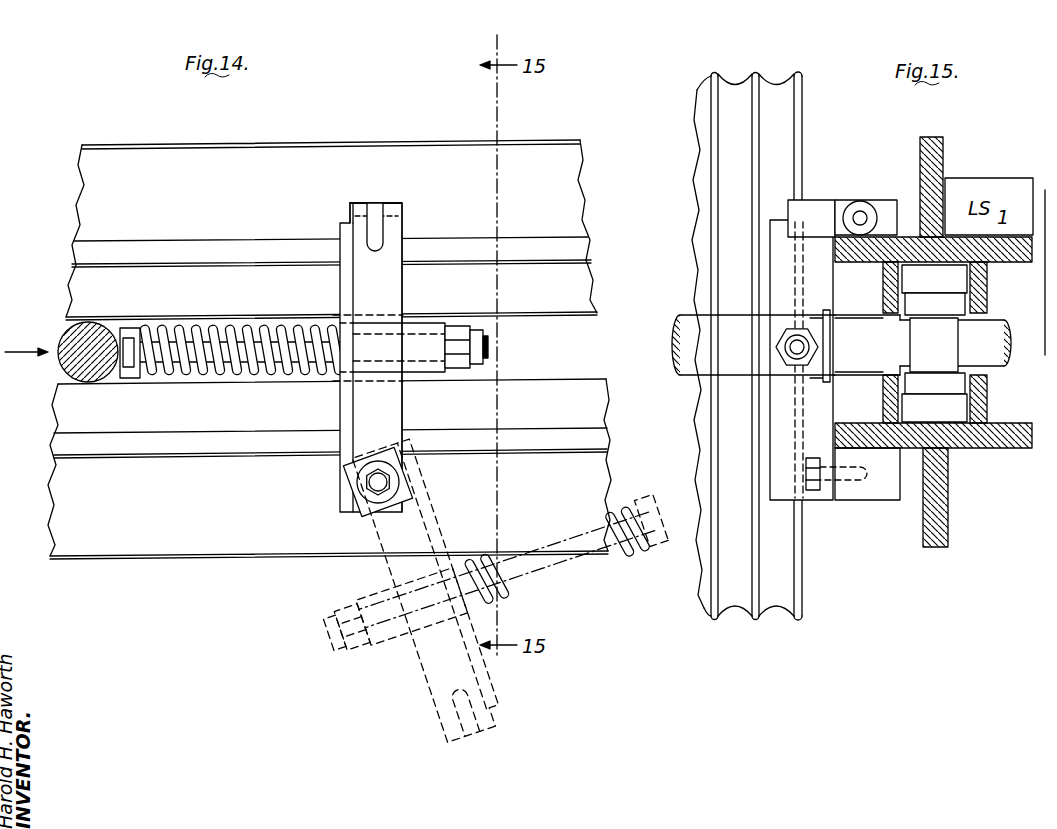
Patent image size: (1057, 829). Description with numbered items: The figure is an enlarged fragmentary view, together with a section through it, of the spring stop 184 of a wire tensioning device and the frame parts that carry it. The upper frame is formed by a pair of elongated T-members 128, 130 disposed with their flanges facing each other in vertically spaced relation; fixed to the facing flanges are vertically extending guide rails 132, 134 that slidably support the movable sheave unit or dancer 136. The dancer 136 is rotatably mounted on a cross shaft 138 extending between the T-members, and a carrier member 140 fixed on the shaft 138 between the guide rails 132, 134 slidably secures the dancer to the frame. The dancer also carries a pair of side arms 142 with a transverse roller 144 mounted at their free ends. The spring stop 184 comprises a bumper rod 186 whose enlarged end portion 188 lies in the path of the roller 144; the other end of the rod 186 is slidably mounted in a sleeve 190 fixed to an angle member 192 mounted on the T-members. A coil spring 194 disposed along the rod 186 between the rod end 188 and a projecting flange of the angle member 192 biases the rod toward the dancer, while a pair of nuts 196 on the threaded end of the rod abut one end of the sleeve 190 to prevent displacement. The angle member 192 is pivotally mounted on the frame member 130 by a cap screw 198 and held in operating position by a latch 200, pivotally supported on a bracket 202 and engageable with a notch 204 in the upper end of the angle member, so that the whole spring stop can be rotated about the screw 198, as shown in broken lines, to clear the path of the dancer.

In FIG. 14, the T-member 128 is at (455, 150).
In FIG. 15, the T-member 128 is at (938, 152).
In FIG. 14, the T-member 130 is at (208, 540).
In FIG. 15, the T-member 130 is at (948, 537).
In FIG. 14, the guide rail 132 is at (583, 287).
In FIG. 15, the guide rail 132 is at (883, 293).
In FIG. 14, the guide rail 134 is at (542, 388).
In FIG. 15, the guide rail 134 is at (890, 405).
In FIG. 15, the dancer sheave unit 136 is at (781, 625).
In FIG. 15, the cross shaft 138 is at (858, 310).
In FIG. 15, the carrier member 140 is at (955, 350).
In FIG. 15, the side arm 142 is at (830, 355).
In FIG. 14, the transverse roller 144 is at (84, 328).
In FIG. 15, the transverse roller 144 is at (690, 315).
In FIG. 14, the spring stop 184 is at (392, 293).
In FIG. 14, the bumper rod 186 is at (232, 360).
In FIG. 15, the bumper rod 186 is at (778, 350).
In FIG. 14, the enlarged end portion 188 is at (130, 378).
In FIG. 14, the sleeve 190 is at (432, 325).
In FIG. 14, the angle member 192 is at (340, 288).
In FIG. 15, the angle member 192 is at (778, 440).
In FIG. 14, the coil spring 194 is at (200, 328).
In FIG. 14, the nuts 196 is at (470, 372).
In FIG. 15, the nuts 196 is at (783, 338).
In FIG. 14, the cap screw 198 is at (357, 486).
In FIG. 15, the cap screw 198 is at (848, 503).
In FIG. 14, the latch 200 is at (395, 210).
In FIG. 15, the latch 200 is at (812, 205).
In FIG. 14, the bracket 202 is at (357, 208).
In FIG. 15, the bracket 202 is at (887, 205).
In FIG. 14, the notch 204 is at (370, 244).